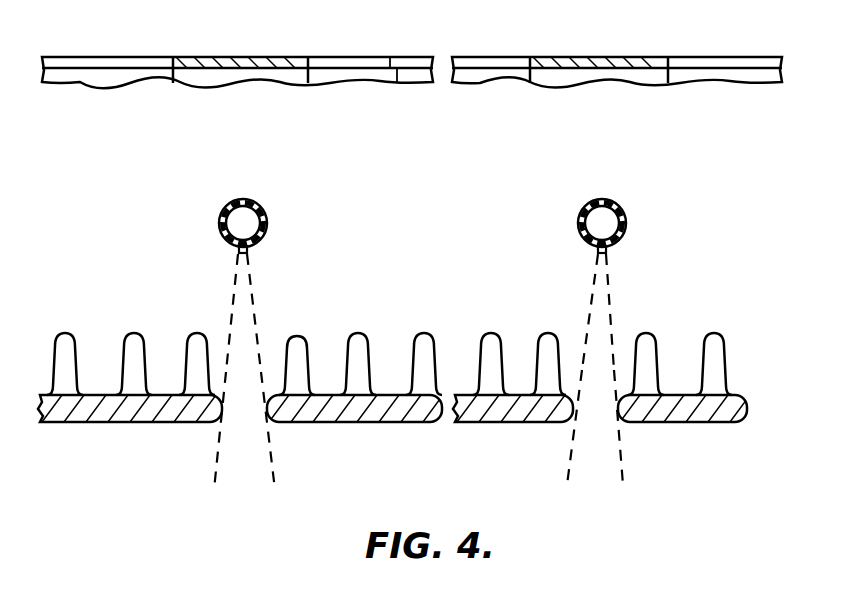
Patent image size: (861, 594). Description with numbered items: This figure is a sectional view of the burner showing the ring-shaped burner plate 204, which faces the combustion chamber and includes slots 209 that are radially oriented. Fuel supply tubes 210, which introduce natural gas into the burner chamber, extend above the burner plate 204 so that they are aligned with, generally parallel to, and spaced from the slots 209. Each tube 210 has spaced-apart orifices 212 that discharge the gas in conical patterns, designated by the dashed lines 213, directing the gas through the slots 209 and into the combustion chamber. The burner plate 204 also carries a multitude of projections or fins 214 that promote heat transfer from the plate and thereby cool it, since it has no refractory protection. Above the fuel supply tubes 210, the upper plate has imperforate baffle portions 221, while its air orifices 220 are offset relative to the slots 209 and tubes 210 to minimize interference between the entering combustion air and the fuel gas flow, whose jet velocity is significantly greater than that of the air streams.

The burner plate 204 is at (110, 423).
The slots 209 is at (262, 430).
The fuel supply tubes 210 is at (265, 216).
The orifices 212 is at (246, 253).
The dashed lines 213 is at (259, 325).
The fins 214 is at (76, 333).
The orifices 220 is at (138, 57).
The imperforate baffle portions 221 is at (297, 57).